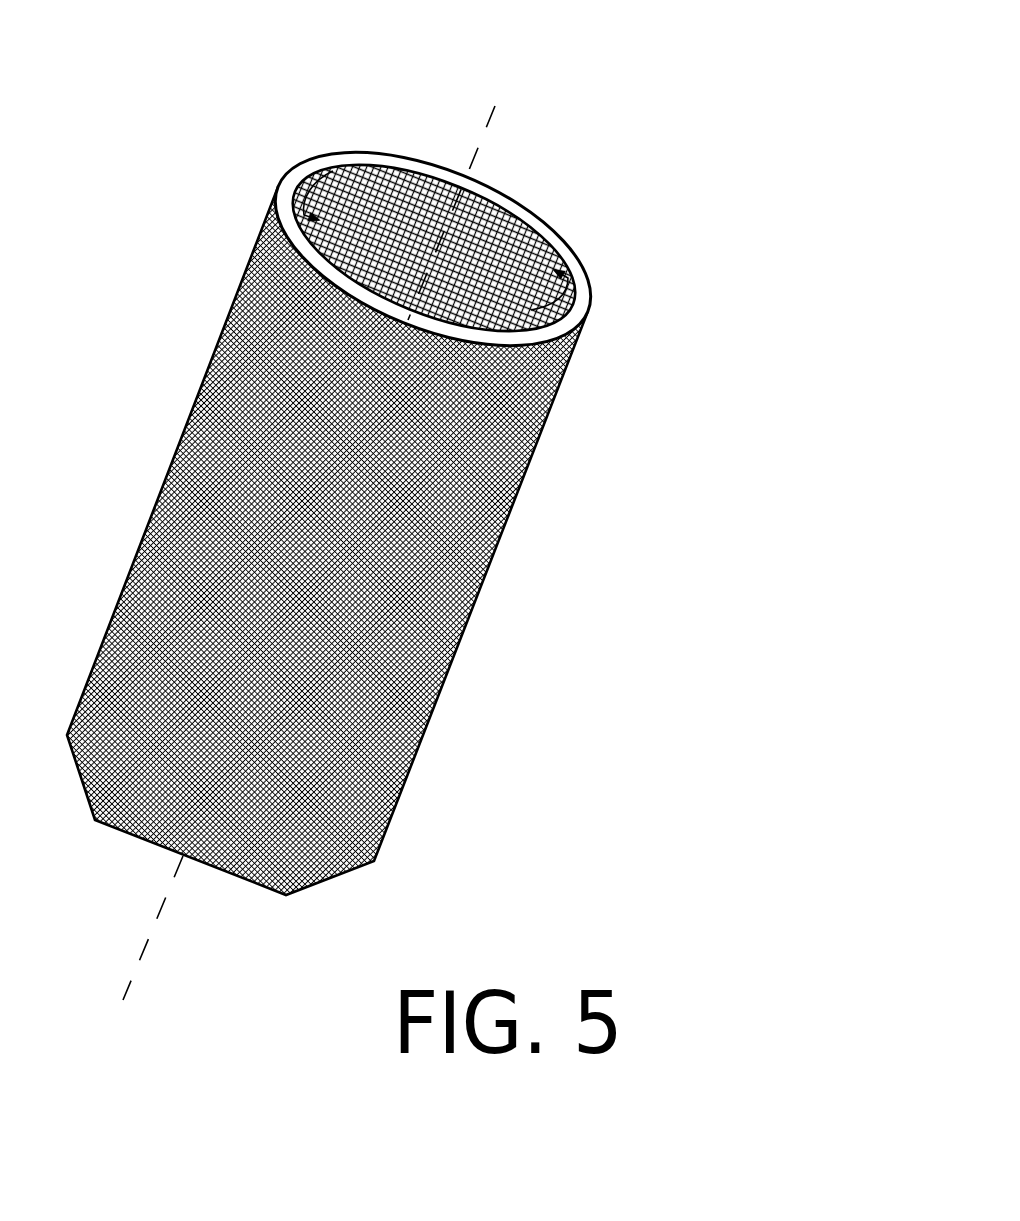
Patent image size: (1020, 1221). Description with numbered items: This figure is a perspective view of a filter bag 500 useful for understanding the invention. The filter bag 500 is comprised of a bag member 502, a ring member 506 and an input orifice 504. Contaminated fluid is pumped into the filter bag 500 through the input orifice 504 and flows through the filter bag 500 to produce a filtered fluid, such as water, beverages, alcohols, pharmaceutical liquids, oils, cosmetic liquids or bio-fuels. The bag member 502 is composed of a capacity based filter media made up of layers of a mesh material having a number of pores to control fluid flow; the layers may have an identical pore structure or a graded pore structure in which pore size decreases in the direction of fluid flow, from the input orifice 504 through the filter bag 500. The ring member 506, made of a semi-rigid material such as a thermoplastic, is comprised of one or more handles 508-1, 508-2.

The filter bag 500 is at (458, 545).
The bag member 502 is at (223, 302).
The input orifice 504 is at (405, 217).
The ring member 506 is at (512, 187).
The handle 508-1 is at (290, 182).
The handle 508-2 is at (627, 284).